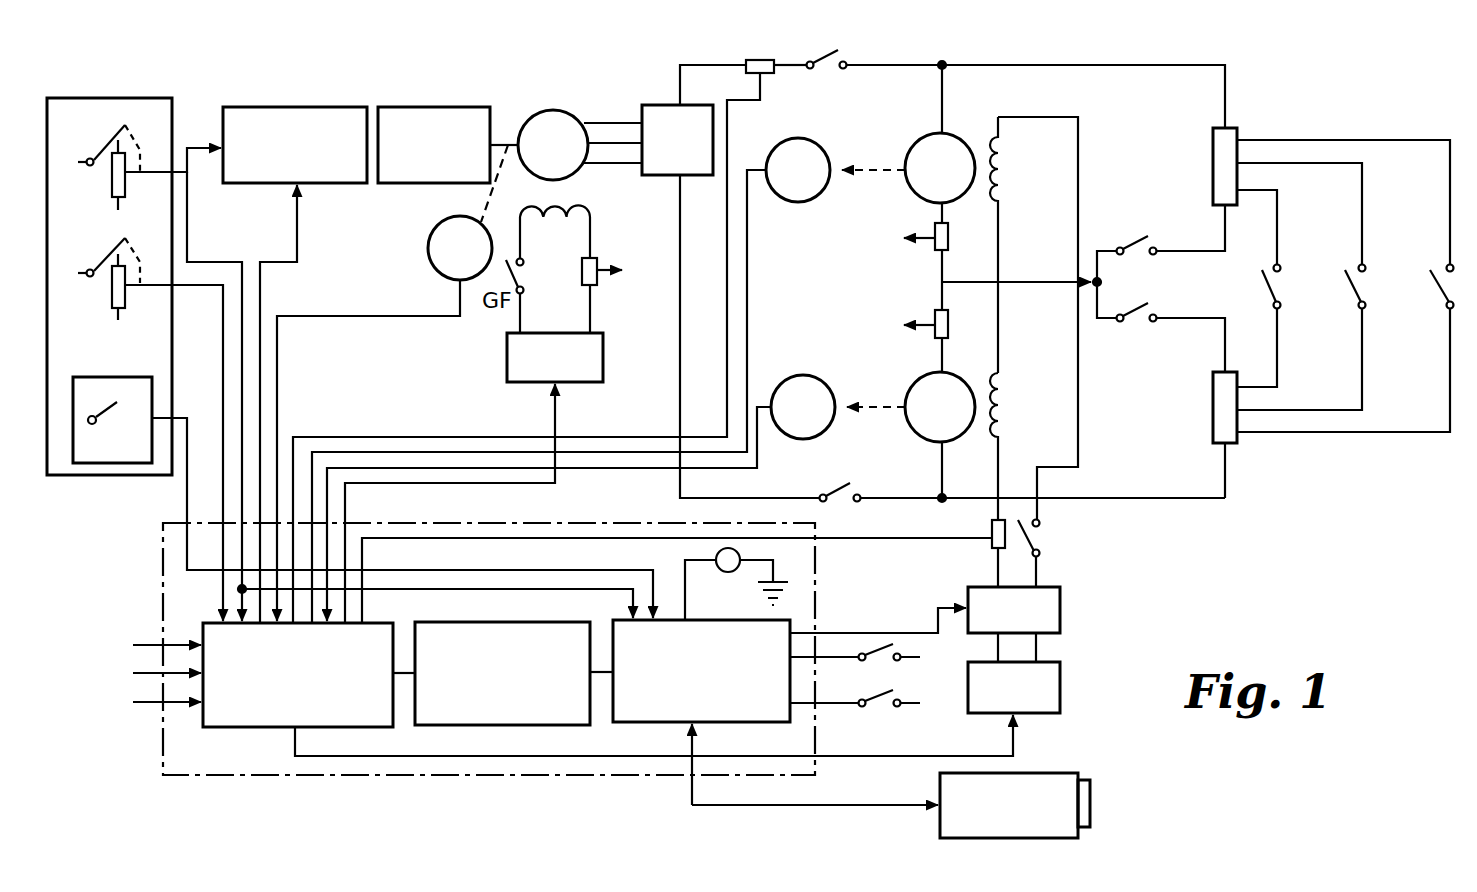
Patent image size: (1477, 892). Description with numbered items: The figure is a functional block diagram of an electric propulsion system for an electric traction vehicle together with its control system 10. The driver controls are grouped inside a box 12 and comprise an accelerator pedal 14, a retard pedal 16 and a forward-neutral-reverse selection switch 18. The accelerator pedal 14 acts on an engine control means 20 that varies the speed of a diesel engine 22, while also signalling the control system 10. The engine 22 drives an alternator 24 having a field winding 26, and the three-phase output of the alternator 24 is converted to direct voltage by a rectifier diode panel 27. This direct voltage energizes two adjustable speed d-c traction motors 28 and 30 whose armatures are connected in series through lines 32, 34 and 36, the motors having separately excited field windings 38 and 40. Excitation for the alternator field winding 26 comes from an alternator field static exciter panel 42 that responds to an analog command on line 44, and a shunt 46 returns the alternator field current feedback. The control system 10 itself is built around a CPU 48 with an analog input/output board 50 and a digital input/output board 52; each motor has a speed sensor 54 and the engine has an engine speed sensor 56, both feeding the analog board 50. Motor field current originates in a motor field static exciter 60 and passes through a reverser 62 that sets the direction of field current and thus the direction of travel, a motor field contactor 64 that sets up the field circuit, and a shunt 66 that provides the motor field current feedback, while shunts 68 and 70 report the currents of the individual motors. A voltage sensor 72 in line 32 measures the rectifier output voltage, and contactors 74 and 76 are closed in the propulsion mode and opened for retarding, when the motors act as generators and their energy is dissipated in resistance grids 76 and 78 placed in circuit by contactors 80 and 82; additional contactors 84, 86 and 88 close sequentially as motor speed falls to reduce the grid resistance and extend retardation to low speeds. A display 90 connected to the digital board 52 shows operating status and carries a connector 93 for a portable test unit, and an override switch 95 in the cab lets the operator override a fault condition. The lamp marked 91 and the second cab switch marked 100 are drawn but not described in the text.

The control system 10 is at (264, 779).
The driver controls box 12 is at (107, 80).
The accelerator pedal 14 is at (107, 183).
The retard pedal 16 is at (107, 294).
The forward-neutral-reverse selection switch 18 is at (117, 377).
The engine control means 20 is at (302, 107).
The diesel engine 22 is at (442, 107).
The alternator 24 is at (552, 110).
The alternator field winding 26 is at (562, 206).
The rectifier diode panel 27 is at (656, 176).
The first traction motor 28 is at (913, 196).
The second traction motor 30 is at (913, 433).
The line 32 is at (942, 96).
The line 34 is at (941, 286).
The line 36 is at (940, 495).
The motor field winding 38 is at (1004, 152).
The motor field winding 40 is at (1004, 390).
The alternator field static exciter panel 42 is at (612, 354).
The line 44 is at (556, 420).
The shunt 46 is at (597, 285).
The CPU 48 is at (532, 725).
The analog input/output board 50 is at (236, 727).
The digital input/output board 52 is at (654, 722).
The speed sensor 54 is at (821, 147).
The engine speed sensor 56 is at (454, 224).
The motor field static exciter 60 is at (1060, 688).
The reverser 62 is at (1061, 614).
The motor field contactor 64 is at (1040, 556).
The shunt 66 is at (995, 520).
The shunt 68 is at (950, 226).
The shunt 70 is at (946, 338).
The voltage sensor 72 is at (775, 60).
The contactor 74 is at (823, 58).
The contactor / resistance grid 76 is at (838, 492).
The resistance grid 78 is at (1213, 440).
The contactor 80 is at (1140, 256).
The contactor 82 is at (1148, 306).
The contactor 84 is at (1274, 268).
The contactor 86 is at (1350, 272).
The contactor 88 is at (1436, 272).
The display 90 is at (1026, 838).
The indicator lamp 91 is at (729, 573).
The connector 93 is at (1090, 788).
The override switch 95 is at (866, 661).
The switch 100 is at (871, 707).